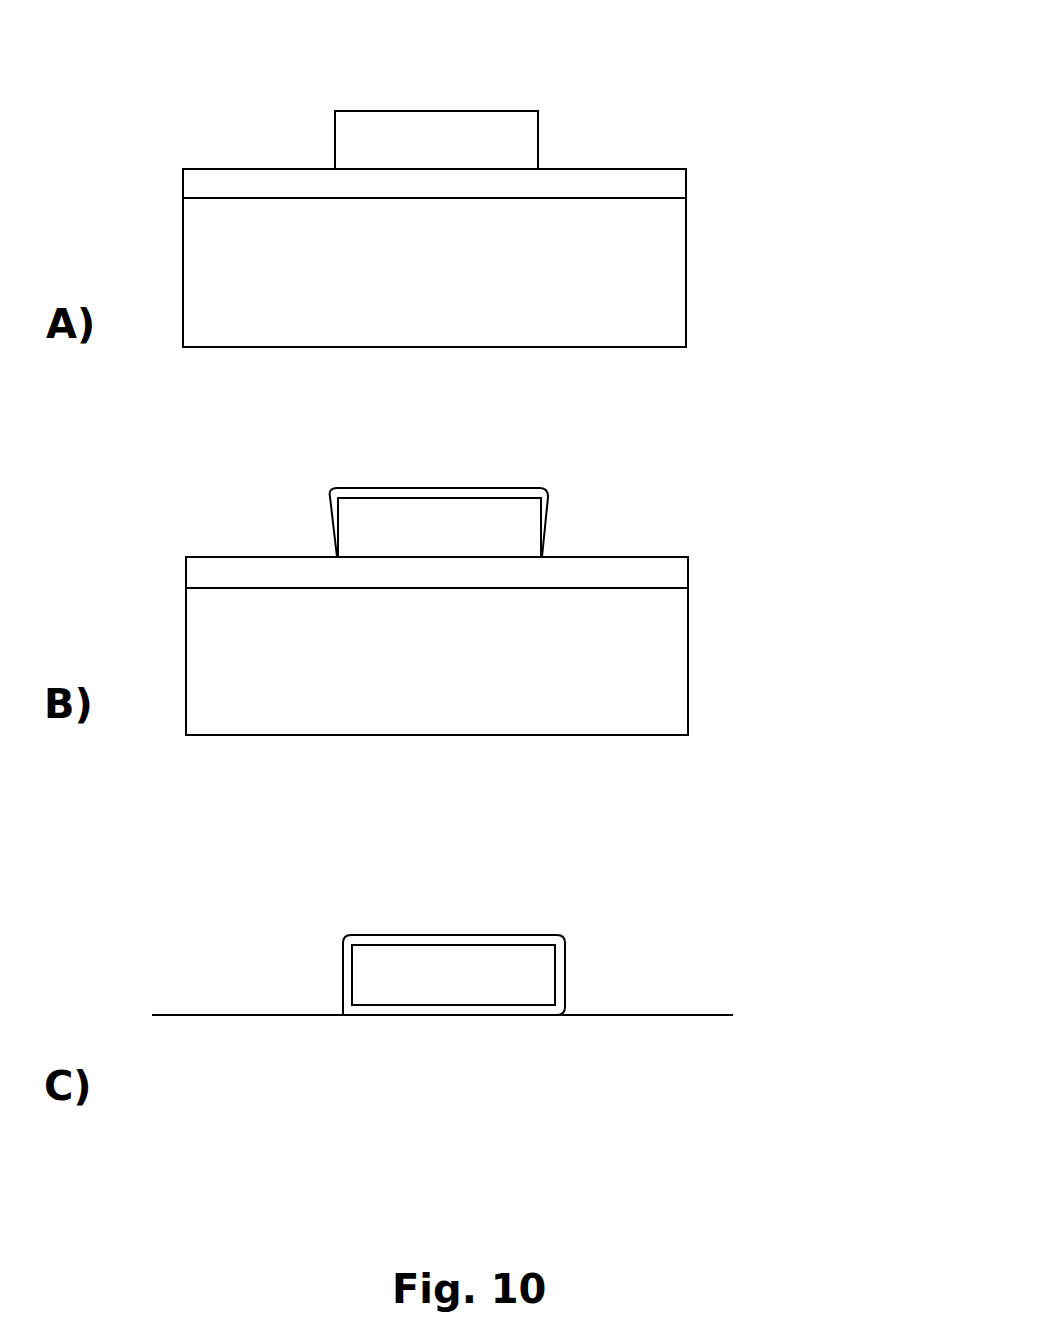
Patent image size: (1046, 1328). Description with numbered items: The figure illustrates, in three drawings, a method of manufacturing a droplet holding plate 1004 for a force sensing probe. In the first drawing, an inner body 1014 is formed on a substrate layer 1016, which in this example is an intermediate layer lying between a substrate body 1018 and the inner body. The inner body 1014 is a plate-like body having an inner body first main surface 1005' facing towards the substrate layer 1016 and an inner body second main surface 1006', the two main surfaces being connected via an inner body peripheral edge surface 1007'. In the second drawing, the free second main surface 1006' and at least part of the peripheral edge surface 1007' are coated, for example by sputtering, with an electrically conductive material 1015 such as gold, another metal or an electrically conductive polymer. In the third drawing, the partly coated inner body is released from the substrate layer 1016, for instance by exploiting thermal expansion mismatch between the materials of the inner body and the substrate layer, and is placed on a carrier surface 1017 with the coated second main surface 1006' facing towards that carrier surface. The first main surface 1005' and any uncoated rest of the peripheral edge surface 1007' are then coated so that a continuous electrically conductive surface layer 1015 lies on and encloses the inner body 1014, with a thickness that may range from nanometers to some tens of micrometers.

The droplet holding plate 1004 is at (330, 967).
The inner body first main surface 1005' is at (336, 124).
The inner body second main surface 1006' is at (481, 554).
The inner body peripheral edge surface 1007' is at (249, 88).
The inner body 1014 is at (508, 140).
The electrically conductive surface layer 1015 is at (490, 493).
The substrate layer 1016 is at (655, 188).
The carrier surface 1017 is at (640, 1014).
The substrate body 1018 is at (670, 293).